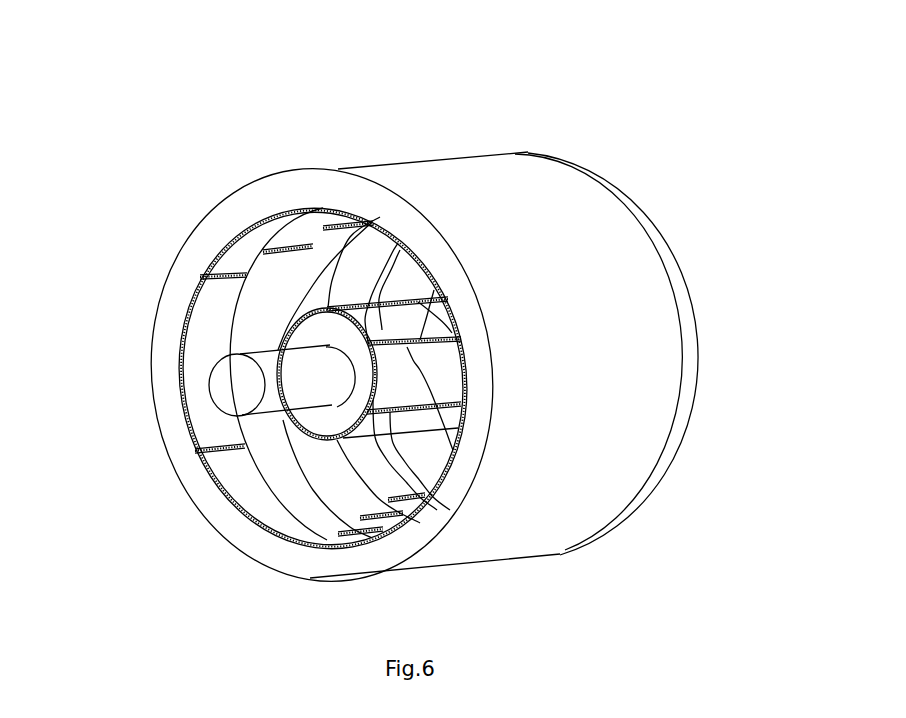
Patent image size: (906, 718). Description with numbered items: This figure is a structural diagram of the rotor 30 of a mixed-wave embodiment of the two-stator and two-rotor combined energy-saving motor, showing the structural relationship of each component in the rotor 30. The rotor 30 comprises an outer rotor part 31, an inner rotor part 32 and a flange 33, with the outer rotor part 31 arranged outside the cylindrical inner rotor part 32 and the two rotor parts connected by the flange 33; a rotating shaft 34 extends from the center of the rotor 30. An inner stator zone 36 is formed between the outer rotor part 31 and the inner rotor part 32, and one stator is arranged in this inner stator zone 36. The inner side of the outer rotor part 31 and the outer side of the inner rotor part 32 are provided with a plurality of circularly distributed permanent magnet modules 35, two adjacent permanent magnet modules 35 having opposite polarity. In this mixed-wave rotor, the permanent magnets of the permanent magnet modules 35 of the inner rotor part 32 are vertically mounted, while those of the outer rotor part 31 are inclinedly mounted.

The rotor 30 is at (303, 85).
The outer rotor part 31 is at (487, 212).
The inner rotor part 32 is at (345, 345).
The flange 33 is at (670, 280).
The rotating shaft 34 is at (272, 378).
The permanent magnet module 35 is at (382, 330).
The inner stator zone 36 is at (410, 288).